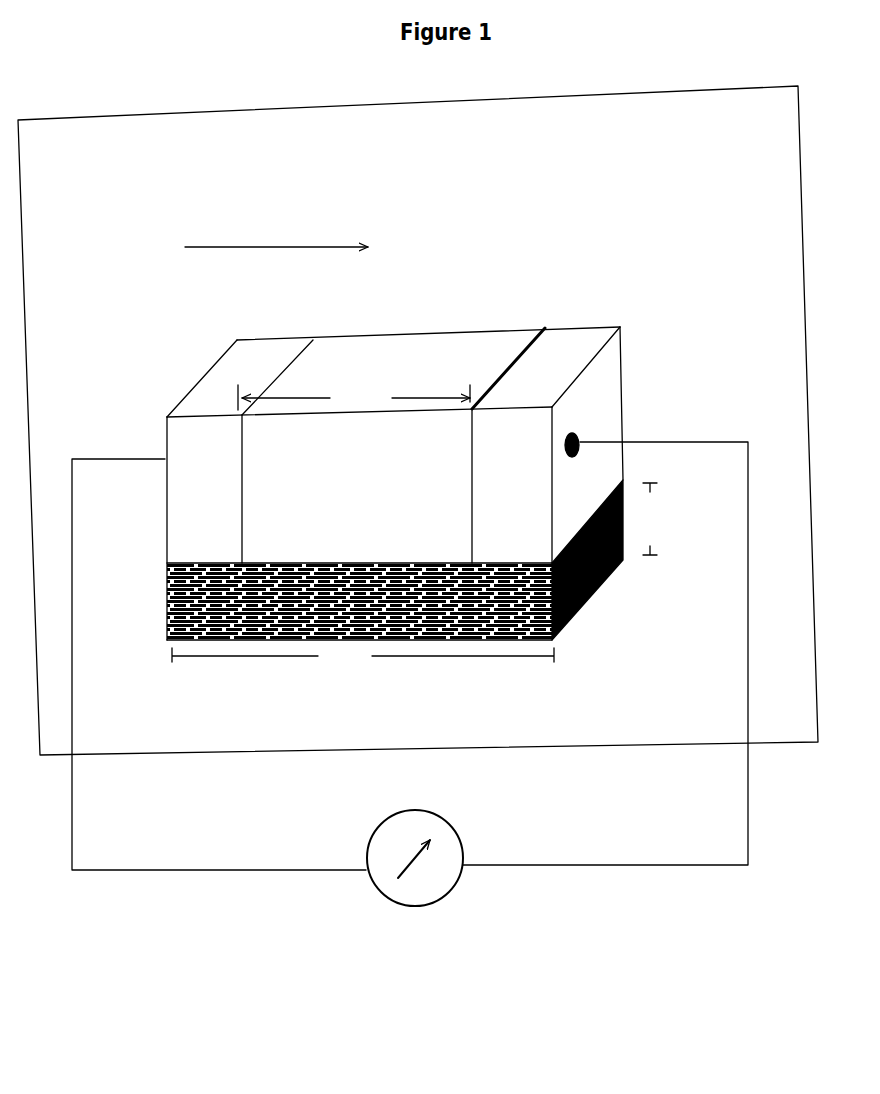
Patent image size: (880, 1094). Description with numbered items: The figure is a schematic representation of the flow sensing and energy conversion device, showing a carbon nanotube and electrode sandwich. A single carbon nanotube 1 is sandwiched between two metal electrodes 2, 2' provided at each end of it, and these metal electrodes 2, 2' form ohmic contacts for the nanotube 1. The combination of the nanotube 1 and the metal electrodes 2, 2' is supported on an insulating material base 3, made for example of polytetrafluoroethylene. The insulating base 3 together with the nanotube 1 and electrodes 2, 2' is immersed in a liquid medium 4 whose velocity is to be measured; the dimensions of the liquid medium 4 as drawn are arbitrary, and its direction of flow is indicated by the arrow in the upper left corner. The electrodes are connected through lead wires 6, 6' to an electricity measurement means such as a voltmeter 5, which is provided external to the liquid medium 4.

The carbon nanotube 1 is at (393, 370).
The metal electrode 2 is at (116, 503).
The metal electrode 2' is at (637, 483).
The insulating material base 3 is at (217, 643).
The liquid medium 4 is at (260, 248).
The voltmeter 5 is at (429, 858).
The lead wire 6 is at (219, 664).
The lead wire 6' is at (605, 679).